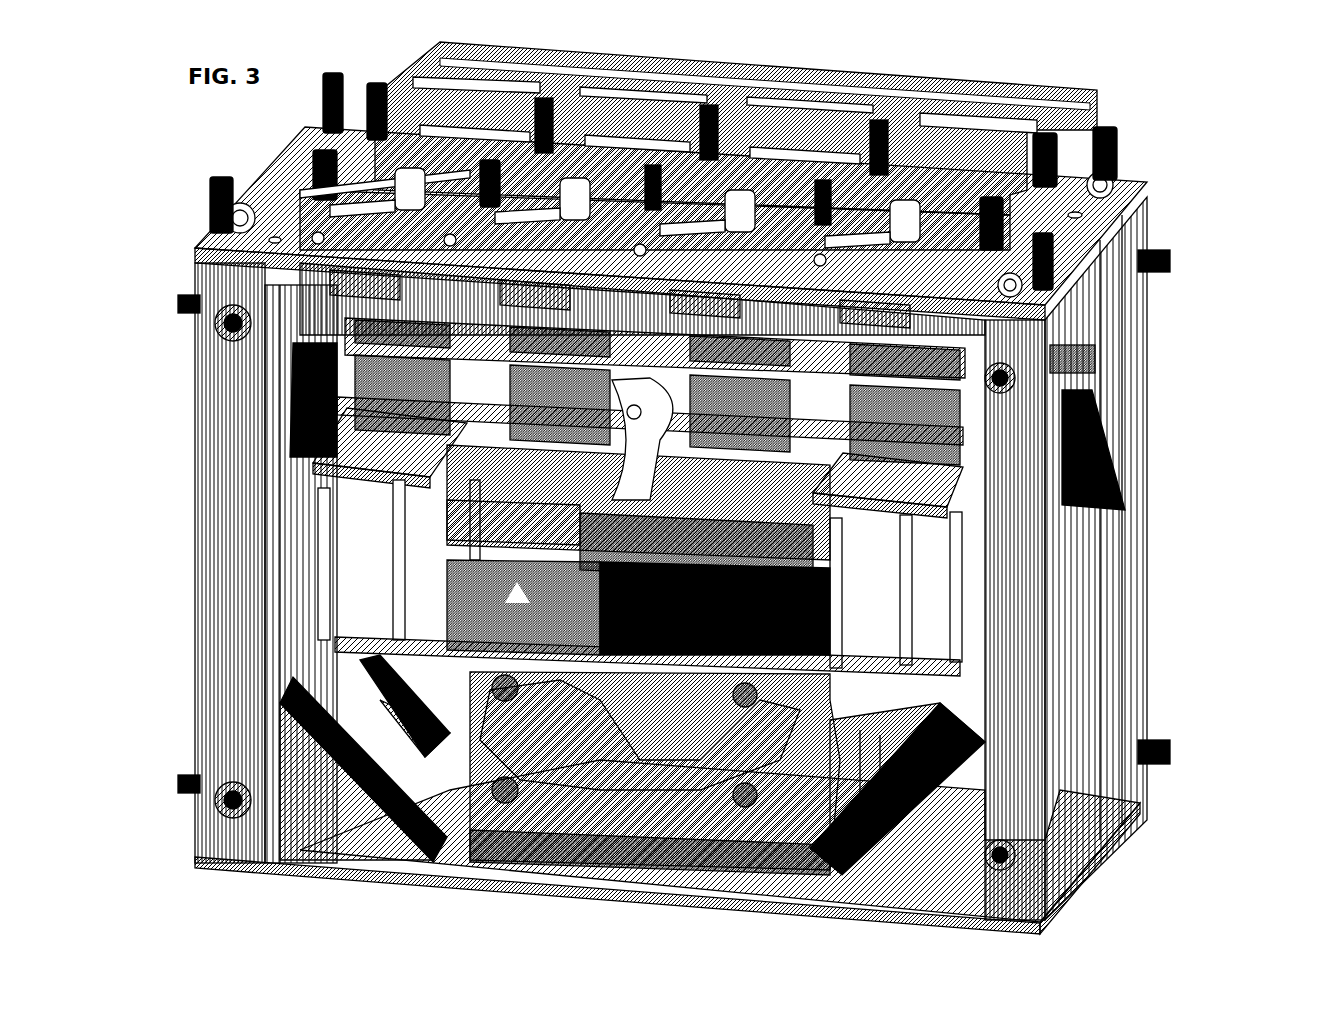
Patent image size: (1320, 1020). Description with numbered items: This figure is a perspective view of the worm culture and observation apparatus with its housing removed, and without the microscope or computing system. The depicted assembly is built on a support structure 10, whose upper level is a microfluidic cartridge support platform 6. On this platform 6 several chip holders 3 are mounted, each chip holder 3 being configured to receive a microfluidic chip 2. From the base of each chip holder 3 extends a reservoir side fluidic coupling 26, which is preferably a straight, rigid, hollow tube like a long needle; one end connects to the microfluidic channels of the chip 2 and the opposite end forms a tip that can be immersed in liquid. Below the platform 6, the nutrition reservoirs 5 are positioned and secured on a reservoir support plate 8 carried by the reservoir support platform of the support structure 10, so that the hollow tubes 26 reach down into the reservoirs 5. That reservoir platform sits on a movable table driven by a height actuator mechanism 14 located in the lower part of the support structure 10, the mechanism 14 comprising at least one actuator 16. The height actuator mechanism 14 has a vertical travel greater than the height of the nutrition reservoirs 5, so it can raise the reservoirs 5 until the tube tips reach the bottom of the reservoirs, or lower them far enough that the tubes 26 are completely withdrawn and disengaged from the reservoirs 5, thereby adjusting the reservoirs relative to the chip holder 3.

The microfluidic chip 2 is at (908, 183).
The chip holder 3 is at (1243, 323).
The support structure 10 is at (1153, 217).
The microfluidic cartridge support platform 6 is at (1067, 240).
The reservoir side fluidic coupling 26 is at (791, 300).
The nutrition reservoirs 5 is at (940, 403).
The reservoir support plate 8 is at (855, 355).
The height actuator mechanism 14 is at (795, 722).
The actuator 16 is at (847, 733).